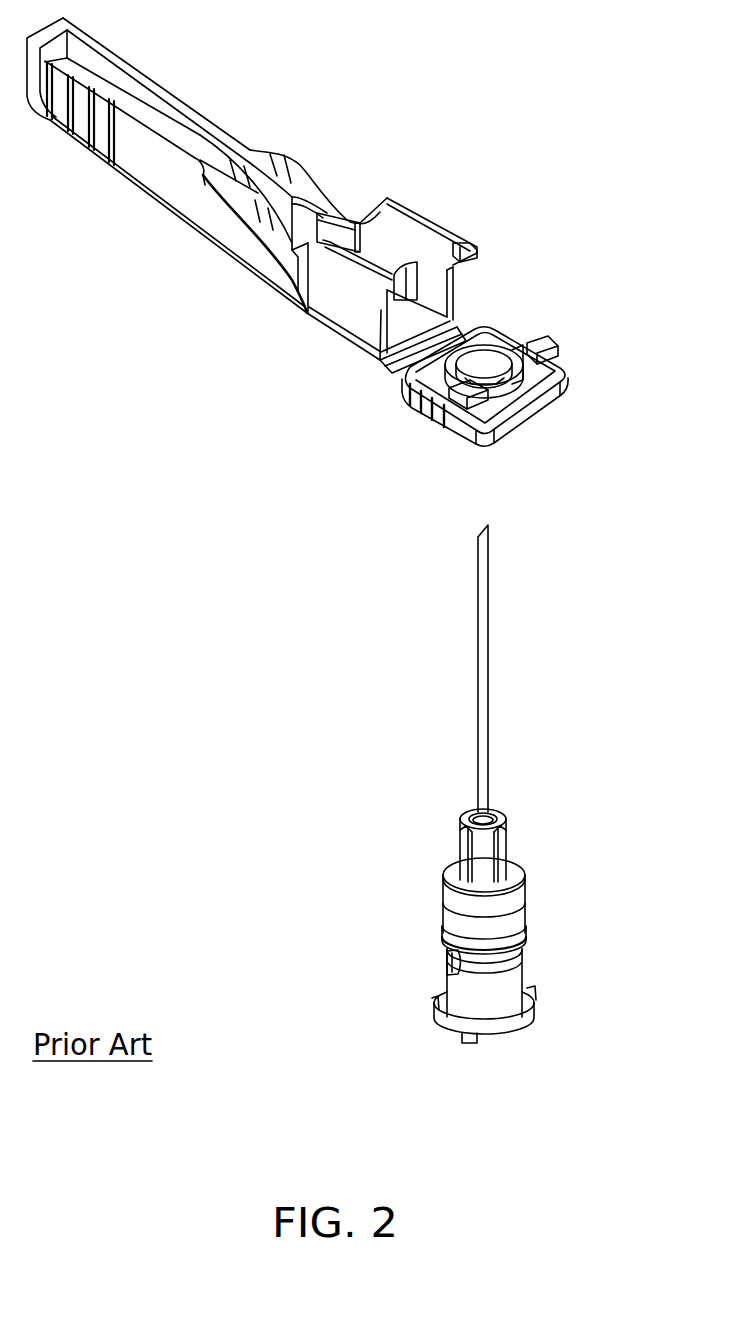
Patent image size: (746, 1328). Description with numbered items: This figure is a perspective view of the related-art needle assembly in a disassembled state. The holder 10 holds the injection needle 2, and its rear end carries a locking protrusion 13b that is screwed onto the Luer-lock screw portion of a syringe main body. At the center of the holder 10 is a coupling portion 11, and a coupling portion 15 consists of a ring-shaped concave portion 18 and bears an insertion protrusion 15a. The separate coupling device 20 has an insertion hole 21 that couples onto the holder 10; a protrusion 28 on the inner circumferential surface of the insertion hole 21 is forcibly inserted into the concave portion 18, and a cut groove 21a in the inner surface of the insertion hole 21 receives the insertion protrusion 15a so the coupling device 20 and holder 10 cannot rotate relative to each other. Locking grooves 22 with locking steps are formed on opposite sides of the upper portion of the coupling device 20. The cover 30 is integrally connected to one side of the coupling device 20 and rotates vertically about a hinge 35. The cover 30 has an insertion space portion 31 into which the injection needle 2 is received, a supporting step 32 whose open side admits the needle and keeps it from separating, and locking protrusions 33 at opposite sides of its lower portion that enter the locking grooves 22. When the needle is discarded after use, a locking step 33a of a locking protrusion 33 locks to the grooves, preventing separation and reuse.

The injection needle 2 is at (488, 677).
The holder 10 is at (400, 878).
The coupling portion 11 is at (510, 823).
The locking protrusion 13b is at (447, 1040).
The coupling portion 15 is at (530, 945).
The insertion protrusion 15a is at (445, 965).
The ring-shaped concave portion 18 is at (513, 963).
The coupling device 20 is at (568, 322).
The insertion hole 21 is at (492, 382).
The cut groove 21a is at (525, 366).
The locking grooves 22 is at (557, 352).
The protrusion 28 is at (484, 360).
The cover 30 is at (145, 233).
The insertion space portion 31 is at (157, 110).
The supporting step 32 is at (208, 122).
The locking protrusions 33 is at (398, 282).
The locking step 33a is at (481, 226).
The hinge 35 is at (400, 372).